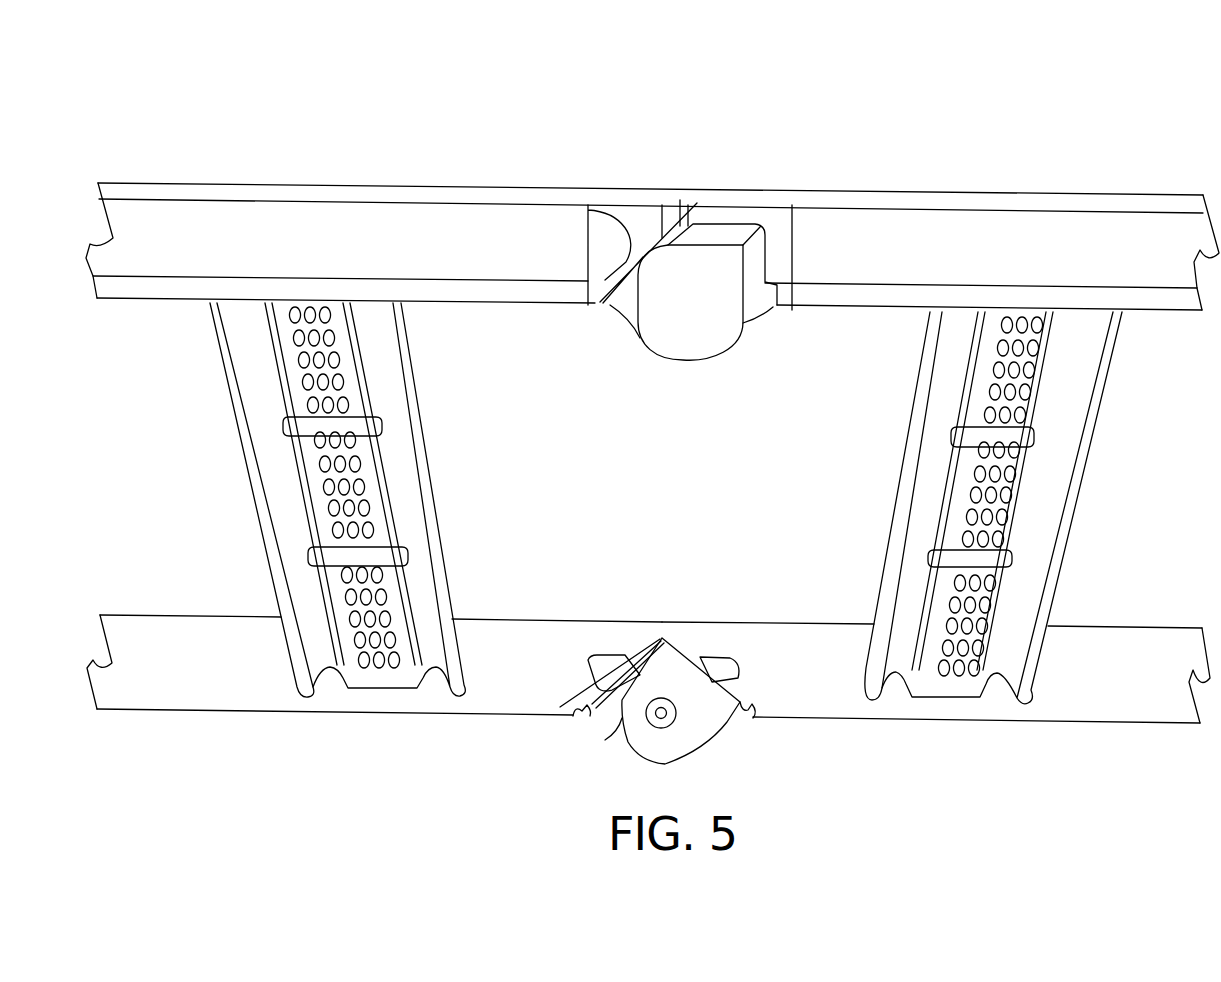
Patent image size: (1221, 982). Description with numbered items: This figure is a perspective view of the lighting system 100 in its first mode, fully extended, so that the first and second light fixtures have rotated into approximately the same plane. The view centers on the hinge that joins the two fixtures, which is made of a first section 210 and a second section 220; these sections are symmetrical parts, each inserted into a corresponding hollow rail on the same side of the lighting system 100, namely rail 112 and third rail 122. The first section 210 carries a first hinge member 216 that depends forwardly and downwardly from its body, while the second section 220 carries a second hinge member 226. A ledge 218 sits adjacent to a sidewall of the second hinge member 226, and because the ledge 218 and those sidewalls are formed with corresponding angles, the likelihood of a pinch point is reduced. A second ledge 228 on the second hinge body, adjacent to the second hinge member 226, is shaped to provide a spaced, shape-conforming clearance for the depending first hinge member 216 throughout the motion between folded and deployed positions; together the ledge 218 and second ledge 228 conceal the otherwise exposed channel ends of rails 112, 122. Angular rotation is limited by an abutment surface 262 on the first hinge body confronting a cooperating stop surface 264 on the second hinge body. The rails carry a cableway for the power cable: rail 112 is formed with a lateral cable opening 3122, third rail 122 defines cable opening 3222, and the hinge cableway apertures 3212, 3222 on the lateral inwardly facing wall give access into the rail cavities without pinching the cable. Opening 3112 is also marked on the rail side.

The lighting system 100 is at (334, 78).
The first section 210 is at (638, 222).
The ledge 218 is at (662, 205).
The abutment surface 262 is at (680, 200).
The stop surface 264 is at (697, 203).
The second hinge member 226 is at (677, 262).
The second section 220 is at (730, 278).
The third rail 122 is at (180, 718).
The rail 112 is at (1040, 724).
The first hinge member 216 is at (623, 735).
The second ledge 228 is at (605, 740).
The cable opening 3122 is at (617, 655).
The first rail flange 3112 is at (712, 658).
The cable opening 3222 is at (560, 707).
The hinge cableway aperture 3212 is at (745, 667).